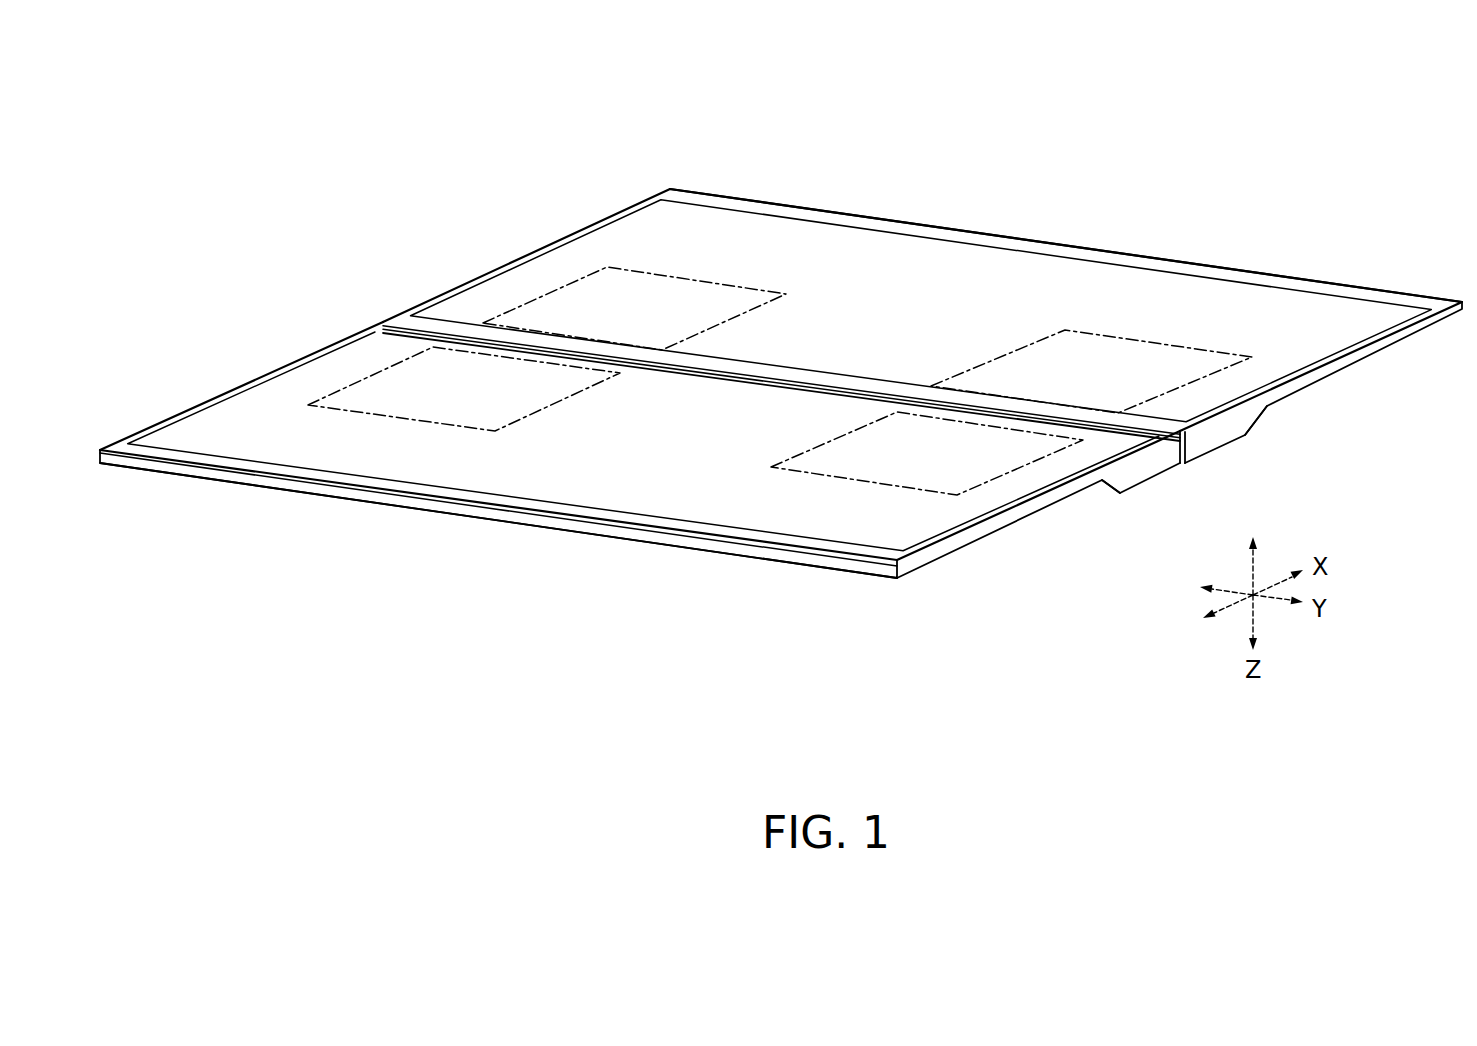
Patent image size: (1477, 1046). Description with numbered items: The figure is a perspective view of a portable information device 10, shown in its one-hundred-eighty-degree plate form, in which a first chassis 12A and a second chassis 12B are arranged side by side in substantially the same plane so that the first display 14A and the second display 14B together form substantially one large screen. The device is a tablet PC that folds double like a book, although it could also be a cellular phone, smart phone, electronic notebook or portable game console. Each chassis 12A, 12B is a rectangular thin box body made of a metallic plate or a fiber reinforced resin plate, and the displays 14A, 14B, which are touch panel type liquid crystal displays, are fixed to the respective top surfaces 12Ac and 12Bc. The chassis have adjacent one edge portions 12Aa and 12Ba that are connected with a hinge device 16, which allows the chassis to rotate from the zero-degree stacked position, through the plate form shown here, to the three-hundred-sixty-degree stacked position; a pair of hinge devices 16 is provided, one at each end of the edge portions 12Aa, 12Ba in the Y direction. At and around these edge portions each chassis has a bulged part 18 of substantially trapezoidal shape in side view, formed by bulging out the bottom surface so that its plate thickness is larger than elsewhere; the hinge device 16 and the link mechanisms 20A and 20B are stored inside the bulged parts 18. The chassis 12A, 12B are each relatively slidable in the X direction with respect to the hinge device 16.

The portable information device 10 is at (289, 134).
The first chassis 12A is at (558, 543).
The one edge portion of first chassis 12Aa is at (1186, 447).
The top surface of first chassis 12Ac is at (717, 530).
The second chassis 12B is at (1198, 247).
The one edge portion of second chassis 12Ba is at (1172, 460).
The top surface of second chassis 12Bc is at (870, 215).
The first display 14A is at (307, 390).
The second display 14B is at (548, 277).
The hinge device 16 is at (390, 418).
The bulged part 18 is at (1242, 426).
The link mechanism 20A is at (875, 487).
The link mechanism 20B is at (681, 276).